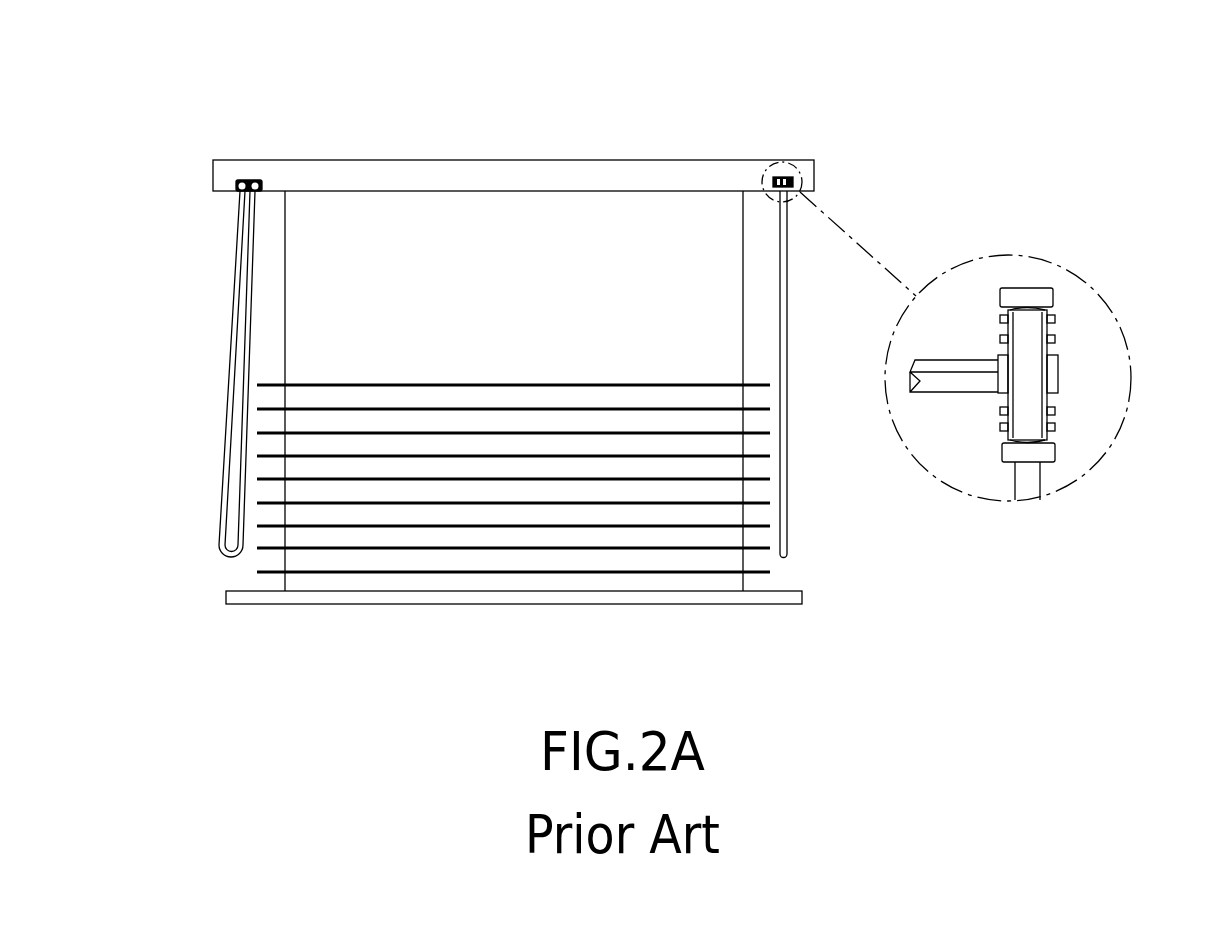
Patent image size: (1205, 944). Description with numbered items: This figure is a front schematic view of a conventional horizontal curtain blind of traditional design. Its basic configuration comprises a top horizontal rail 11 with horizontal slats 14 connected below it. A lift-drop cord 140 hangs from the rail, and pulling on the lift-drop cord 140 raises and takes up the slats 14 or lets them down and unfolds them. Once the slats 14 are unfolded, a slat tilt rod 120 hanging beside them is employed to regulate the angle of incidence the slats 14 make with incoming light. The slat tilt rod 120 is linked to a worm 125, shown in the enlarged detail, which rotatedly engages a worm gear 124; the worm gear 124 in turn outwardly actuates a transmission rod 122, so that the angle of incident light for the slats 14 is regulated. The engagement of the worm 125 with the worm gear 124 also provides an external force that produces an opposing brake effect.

The top horizontal rail 11 is at (507, 180).
The slats 14 is at (666, 547).
The lift-drop cord 140 is at (223, 440).
The slat tilt rod 120 is at (782, 494).
The transmission rod 122 is at (955, 382).
The worm gear 124 is at (1058, 366).
The worm 125 is at (1022, 452).